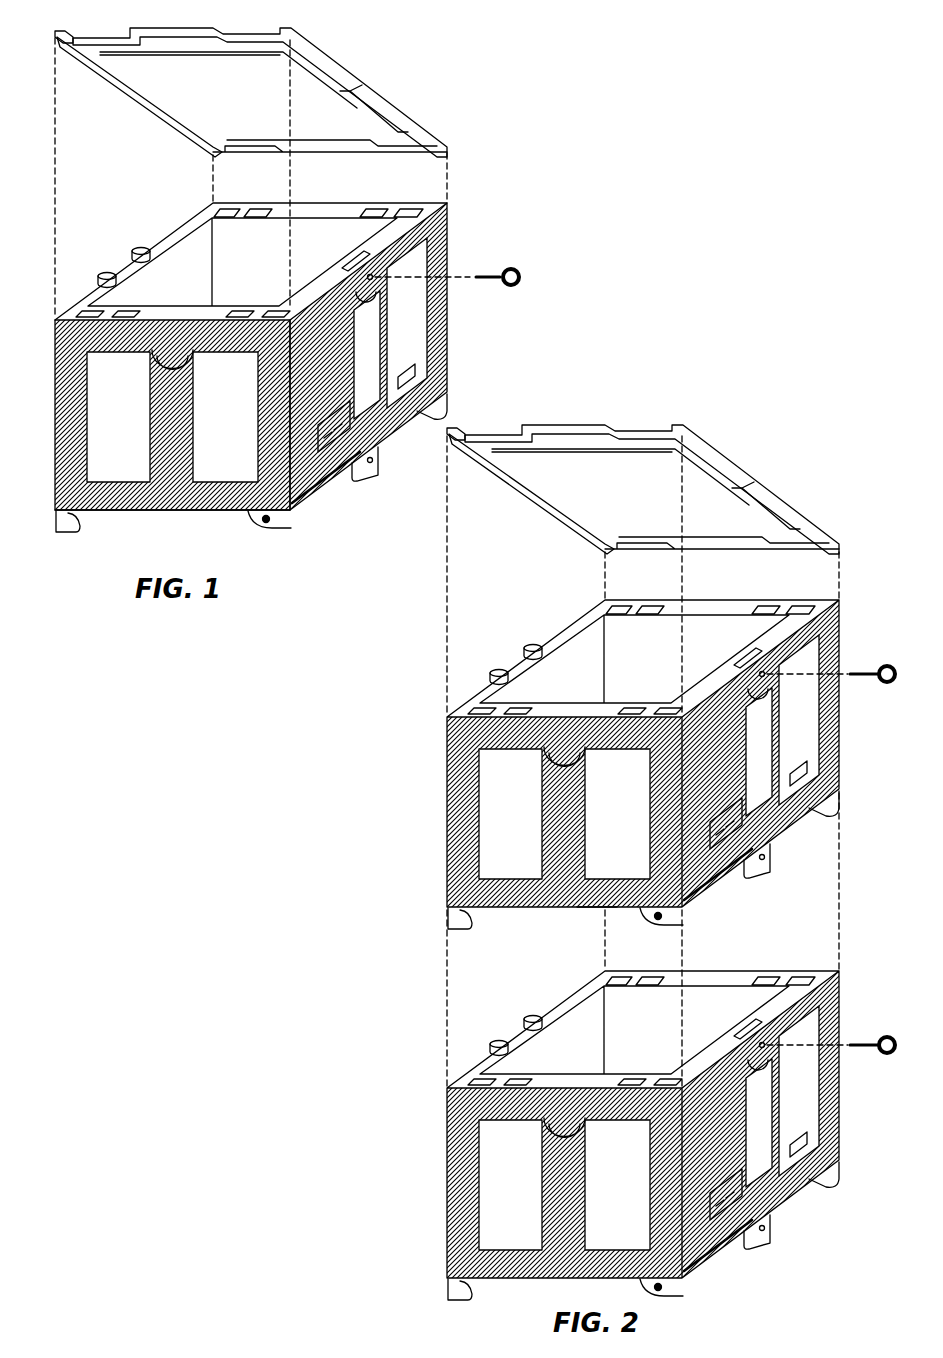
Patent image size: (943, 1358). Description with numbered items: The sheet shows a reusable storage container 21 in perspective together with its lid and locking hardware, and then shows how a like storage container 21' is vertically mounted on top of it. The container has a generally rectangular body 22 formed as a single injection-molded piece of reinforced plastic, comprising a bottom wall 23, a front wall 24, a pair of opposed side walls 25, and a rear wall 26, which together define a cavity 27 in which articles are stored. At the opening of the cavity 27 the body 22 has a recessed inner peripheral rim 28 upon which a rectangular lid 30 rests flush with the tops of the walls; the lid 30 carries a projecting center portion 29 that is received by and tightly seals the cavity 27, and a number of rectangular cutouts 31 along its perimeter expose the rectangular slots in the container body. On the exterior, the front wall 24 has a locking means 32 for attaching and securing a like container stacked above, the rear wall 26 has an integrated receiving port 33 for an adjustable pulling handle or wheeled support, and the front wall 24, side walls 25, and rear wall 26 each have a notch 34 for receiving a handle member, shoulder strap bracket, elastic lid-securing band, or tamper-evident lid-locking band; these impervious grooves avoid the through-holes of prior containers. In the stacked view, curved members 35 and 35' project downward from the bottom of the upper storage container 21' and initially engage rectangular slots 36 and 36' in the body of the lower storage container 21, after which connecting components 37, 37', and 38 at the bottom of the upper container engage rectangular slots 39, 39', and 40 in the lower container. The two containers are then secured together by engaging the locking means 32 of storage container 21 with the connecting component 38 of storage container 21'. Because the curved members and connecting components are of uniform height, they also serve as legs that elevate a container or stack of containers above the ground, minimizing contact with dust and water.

In FIG. 1, the storage container 21 is at (279, 352).
In FIG. 2, the storage container 21 is at (674, 1116).
In FIG. 2, the like storage container 21' is at (647, 753).
In FIG. 1, the body 22 is at (50, 490).
In FIG. 1, the bottom wall 23 is at (180, 513).
In FIG. 1, the front wall 24 is at (413, 327).
In FIG. 1, the side wall 25 is at (330, 228).
In FIG. 1, the rear wall 26 is at (198, 243).
In FIG. 1, the cavity 27 is at (275, 268).
In FIG. 1, the recessed inner peripheral rim 28 is at (282, 207).
In FIG. 1, the projecting center portion 29 is at (150, 70).
In FIG. 1, the lid 30 is at (320, 38).
In FIG. 1, the rectangular cutouts 31 is at (110, 40).
In FIG. 1, the locking means 32 is at (516, 264).
In FIG. 2, the locking means 32 is at (884, 1058).
In FIG. 1, the integrated receiving port 33 is at (137, 238).
In FIG. 1, the notch 34 is at (175, 370).
In FIG. 2, the curved member 35 is at (427, 912).
In FIG. 2, the curved member 35' is at (577, 927).
In FIG. 2, the rectangular slot 36 is at (511, 1061).
In FIG. 2, the rectangular slot 36' is at (610, 967).
In FIG. 2, the connecting component 37 is at (680, 932).
In FIG. 2, the connecting component 37' is at (854, 822).
In FIG. 2, the connecting component 38 is at (777, 875).
In FIG. 2, the rectangular slot 39 is at (647, 1061).
In FIG. 2, the rectangular slot 39' is at (775, 959).
In FIG. 2, the rectangular slot 40 is at (726, 1011).